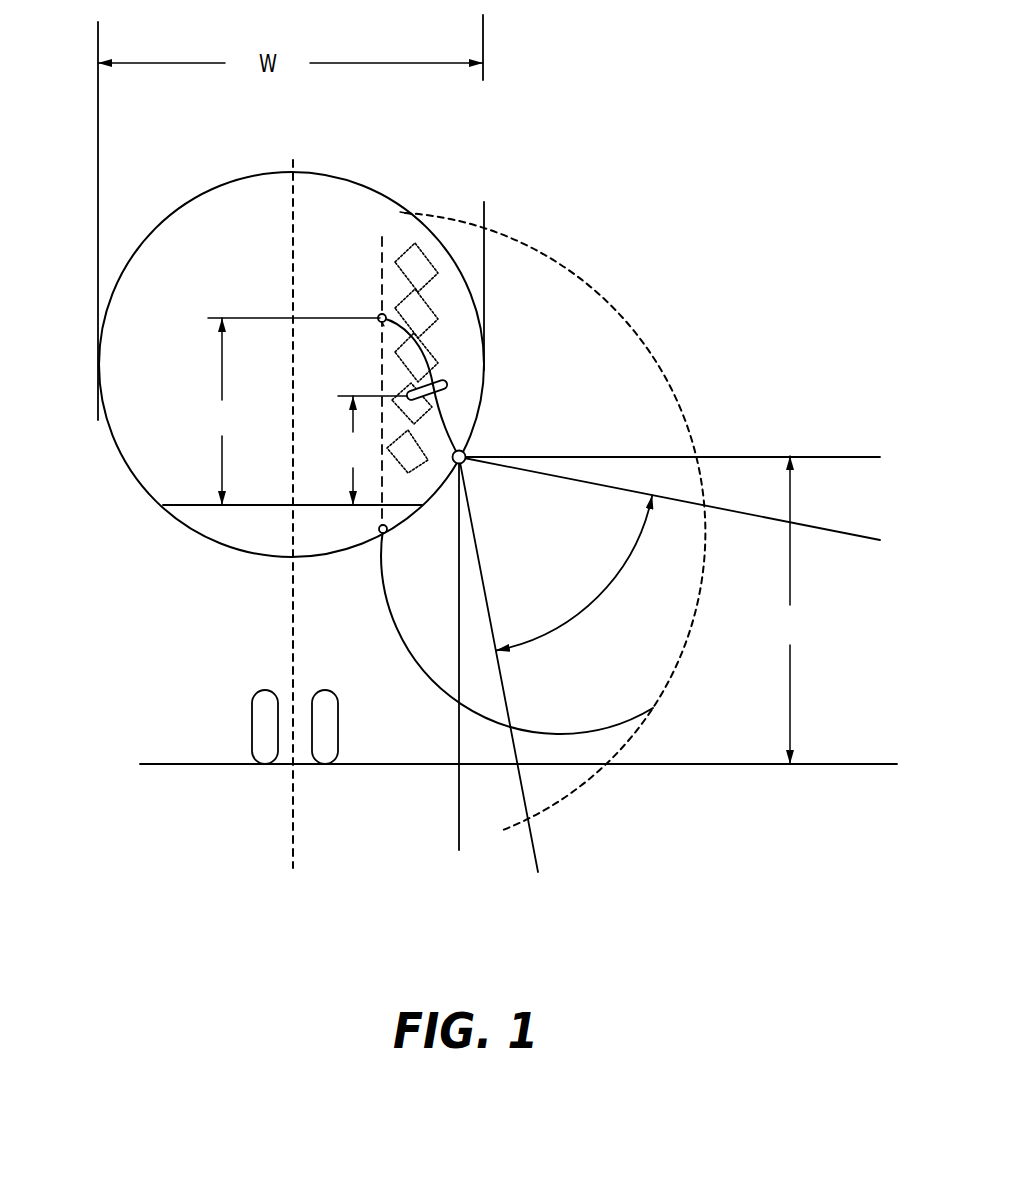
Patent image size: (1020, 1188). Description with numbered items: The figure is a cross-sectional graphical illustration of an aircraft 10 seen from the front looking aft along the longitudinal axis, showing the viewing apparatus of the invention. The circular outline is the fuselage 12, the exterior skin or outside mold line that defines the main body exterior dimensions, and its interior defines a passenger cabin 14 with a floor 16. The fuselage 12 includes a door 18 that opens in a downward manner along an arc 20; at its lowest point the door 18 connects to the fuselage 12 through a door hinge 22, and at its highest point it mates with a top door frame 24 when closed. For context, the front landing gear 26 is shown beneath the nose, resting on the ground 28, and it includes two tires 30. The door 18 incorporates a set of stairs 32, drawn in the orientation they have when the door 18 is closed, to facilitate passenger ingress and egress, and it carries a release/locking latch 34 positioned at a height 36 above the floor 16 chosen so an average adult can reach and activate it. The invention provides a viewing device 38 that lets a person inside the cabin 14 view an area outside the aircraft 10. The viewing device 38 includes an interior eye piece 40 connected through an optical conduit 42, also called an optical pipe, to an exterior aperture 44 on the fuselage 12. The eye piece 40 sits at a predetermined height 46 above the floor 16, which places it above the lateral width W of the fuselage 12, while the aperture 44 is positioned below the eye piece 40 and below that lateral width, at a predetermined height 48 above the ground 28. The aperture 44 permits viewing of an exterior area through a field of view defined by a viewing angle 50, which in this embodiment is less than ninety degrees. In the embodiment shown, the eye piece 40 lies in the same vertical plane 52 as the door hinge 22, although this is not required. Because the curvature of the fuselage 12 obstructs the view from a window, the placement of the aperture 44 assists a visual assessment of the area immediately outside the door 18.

The aircraft 10 is at (416, 150).
The fuselage 12 is at (125, 265).
The passenger cabin 14 is at (118, 402).
The floor 16 is at (192, 508).
The door 18 is at (487, 318).
The arc 20 is at (632, 318).
The door hinge 22 is at (386, 533).
The top door frame 24 is at (408, 212).
The front landing gear 26 is at (140, 668).
The ground 28 is at (178, 764).
The tires 30 is at (262, 690).
The stairs 32 is at (428, 266).
The release/locking latch 34 is at (445, 386).
The height 36 is at (372, 450).
The viewing device 38 is at (380, 334).
The interior eye piece 40 is at (376, 317).
The optical conduit 42 is at (443, 421).
The exterior aperture 44 is at (470, 453).
The height 46 is at (294, 411).
The height 48 is at (790, 610).
The viewing angle 50 is at (588, 606).
The vertical plane 52 is at (380, 260).